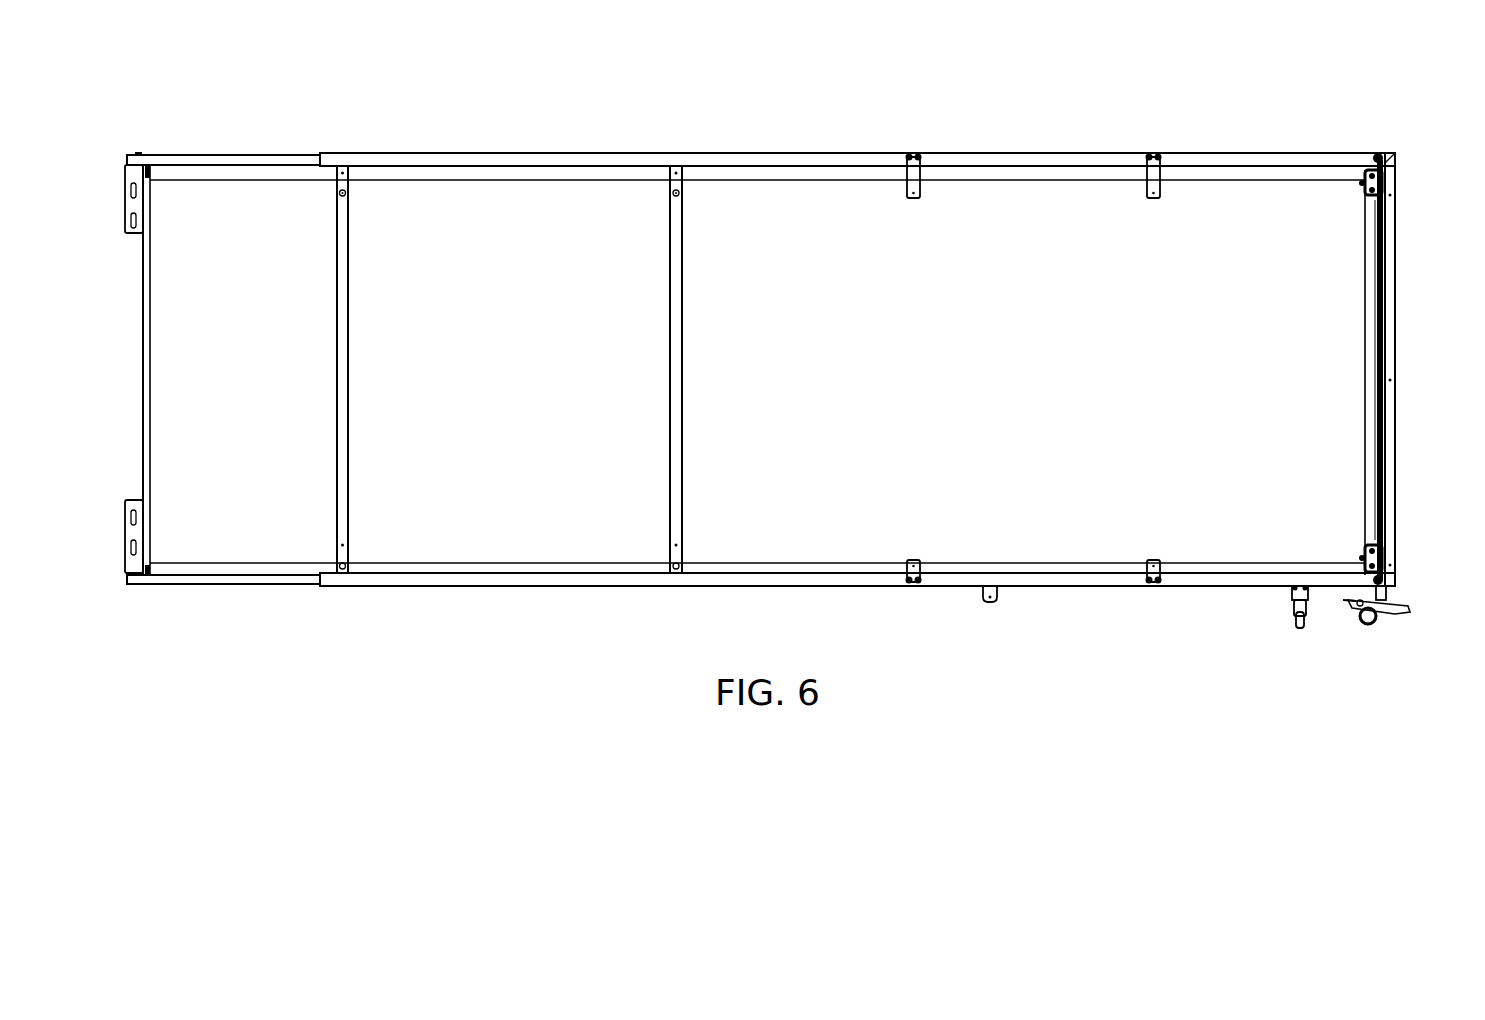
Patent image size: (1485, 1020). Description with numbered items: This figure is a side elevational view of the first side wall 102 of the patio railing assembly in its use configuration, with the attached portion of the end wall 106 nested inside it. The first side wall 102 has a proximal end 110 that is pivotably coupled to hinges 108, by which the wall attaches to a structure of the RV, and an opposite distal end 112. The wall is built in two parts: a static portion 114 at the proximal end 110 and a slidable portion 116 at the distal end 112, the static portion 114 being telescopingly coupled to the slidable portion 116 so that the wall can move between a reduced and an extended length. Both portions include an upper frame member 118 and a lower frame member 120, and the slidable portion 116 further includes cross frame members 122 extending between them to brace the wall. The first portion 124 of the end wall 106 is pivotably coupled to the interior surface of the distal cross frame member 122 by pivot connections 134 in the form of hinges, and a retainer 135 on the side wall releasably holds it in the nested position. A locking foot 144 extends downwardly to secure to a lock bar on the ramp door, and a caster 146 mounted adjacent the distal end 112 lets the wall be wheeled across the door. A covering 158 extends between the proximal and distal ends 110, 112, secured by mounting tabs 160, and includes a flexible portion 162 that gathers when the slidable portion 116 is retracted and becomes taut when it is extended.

The first side wall 102 is at (1022, 76).
The end wall 106 is at (1375, 283).
The hinges 108 is at (125, 163).
The proximal end 110 is at (172, 153).
The distal end 112 is at (1390, 422).
The static portion 114 is at (228, 155).
The slidable portion 116 is at (723, 153).
The upper frame member 118 is at (298, 155).
The lower frame member 120 is at (242, 590).
The cross frame members 122 is at (350, 235).
The first portion of end wall 124 is at (1375, 335).
The pivot connections 134 is at (1382, 225).
The retainer 135 is at (992, 603).
The locking foot 144 is at (1365, 625).
The caster 146 is at (1295, 628).
The covering 158 is at (765, 548).
The mounting tabs 160 is at (1155, 190).
The flexible portion 162 is at (168, 548).